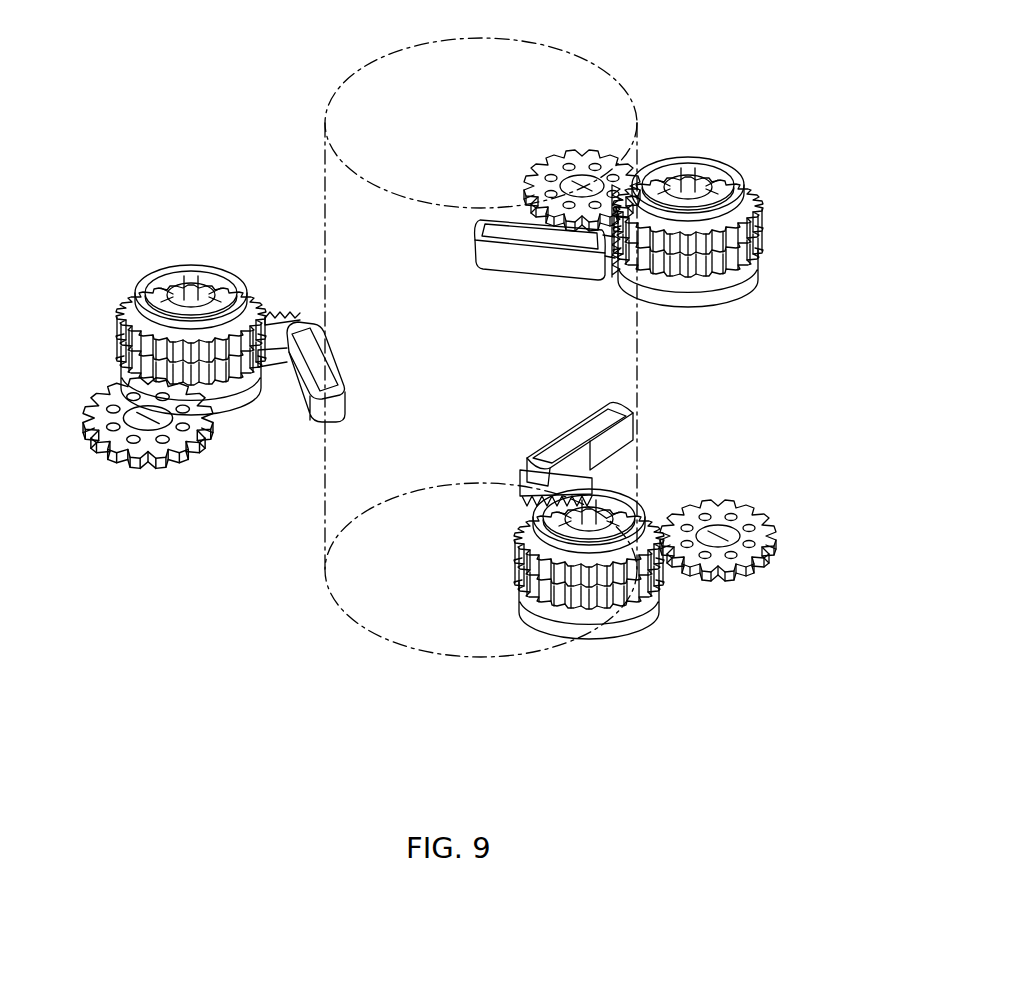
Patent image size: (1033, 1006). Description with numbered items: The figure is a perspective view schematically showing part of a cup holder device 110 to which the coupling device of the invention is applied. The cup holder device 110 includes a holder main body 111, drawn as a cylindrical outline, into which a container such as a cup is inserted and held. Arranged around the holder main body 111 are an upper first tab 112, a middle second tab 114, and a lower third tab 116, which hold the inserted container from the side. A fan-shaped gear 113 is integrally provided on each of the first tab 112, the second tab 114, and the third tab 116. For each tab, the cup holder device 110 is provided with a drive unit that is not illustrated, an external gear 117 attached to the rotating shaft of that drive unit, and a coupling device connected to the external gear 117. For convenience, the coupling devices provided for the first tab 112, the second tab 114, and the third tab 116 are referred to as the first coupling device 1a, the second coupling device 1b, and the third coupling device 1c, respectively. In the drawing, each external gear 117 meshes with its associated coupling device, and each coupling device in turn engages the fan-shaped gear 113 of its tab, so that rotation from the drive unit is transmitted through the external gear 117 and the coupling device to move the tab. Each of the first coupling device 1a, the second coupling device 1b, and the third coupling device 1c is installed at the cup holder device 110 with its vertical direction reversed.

The cup holder device 110 is at (263, 82).
The holder main body 111 is at (597, 67).
The first tab 112 is at (542, 275).
The fan-shaped gear 113 is at (277, 312).
The second tab 114 is at (310, 393).
The third tab 116 is at (612, 404).
The external gear 117 is at (583, 150).
The first coupling device 1a is at (720, 142).
The second coupling device 1b is at (152, 258).
The third coupling device 1c is at (663, 627).